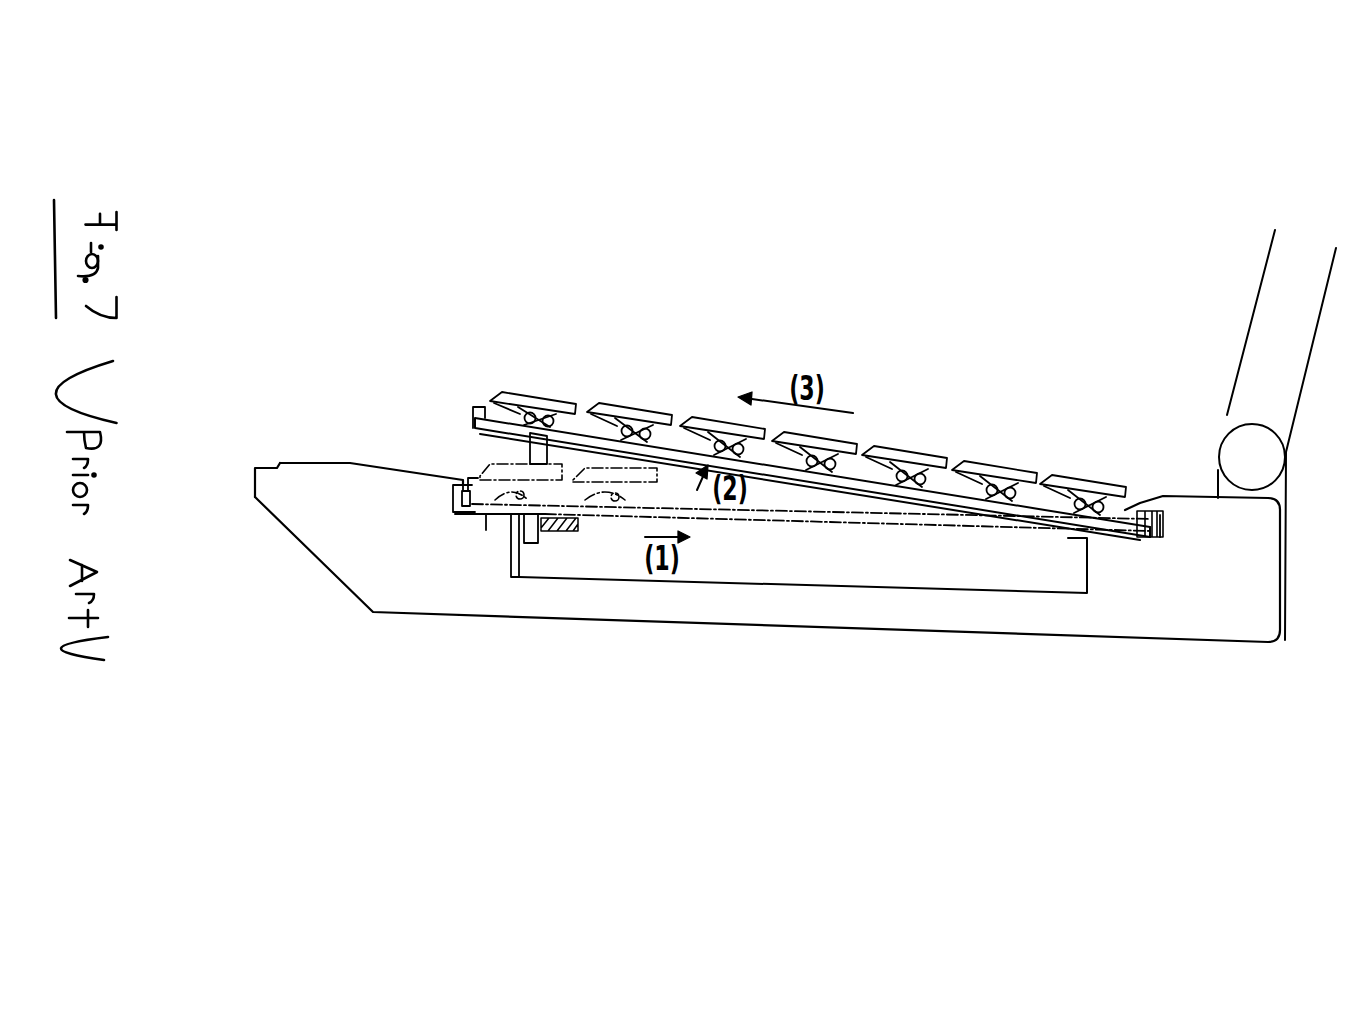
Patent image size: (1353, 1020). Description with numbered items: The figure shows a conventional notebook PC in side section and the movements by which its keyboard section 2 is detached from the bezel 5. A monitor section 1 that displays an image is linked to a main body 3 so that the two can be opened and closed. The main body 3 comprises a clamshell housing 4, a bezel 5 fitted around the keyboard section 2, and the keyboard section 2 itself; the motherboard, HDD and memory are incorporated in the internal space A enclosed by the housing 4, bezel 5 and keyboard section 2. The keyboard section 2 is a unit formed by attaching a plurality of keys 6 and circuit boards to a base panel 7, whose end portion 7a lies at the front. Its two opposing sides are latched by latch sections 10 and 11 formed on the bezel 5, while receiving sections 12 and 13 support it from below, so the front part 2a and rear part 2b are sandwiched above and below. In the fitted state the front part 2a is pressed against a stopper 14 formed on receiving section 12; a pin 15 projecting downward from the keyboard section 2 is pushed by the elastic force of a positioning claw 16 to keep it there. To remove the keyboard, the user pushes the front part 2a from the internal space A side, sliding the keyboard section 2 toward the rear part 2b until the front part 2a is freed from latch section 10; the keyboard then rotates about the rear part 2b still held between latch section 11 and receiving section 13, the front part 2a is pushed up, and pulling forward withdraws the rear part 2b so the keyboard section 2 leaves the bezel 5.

The monitor section 1 is at (1260, 336).
The keyboard section 2 is at (657, 389).
The front part 2a is at (490, 516).
The rear part 2b is at (1158, 522).
The main body 3 is at (293, 475).
The housing 4 is at (413, 613).
The bezel 5 is at (347, 463).
The keys 6 is at (933, 455).
The base panel 7 is at (842, 486).
The rail end stop 7a is at (482, 411).
The latch section 10 is at (467, 480).
The latch section 11 is at (1140, 509).
The receiving section 12 is at (514, 570).
The receiving section 13 is at (1074, 535).
The stopper 14 is at (460, 507).
The pin 15 is at (567, 428).
The positioning claw 16 is at (553, 530).
The internal space A is at (893, 565).